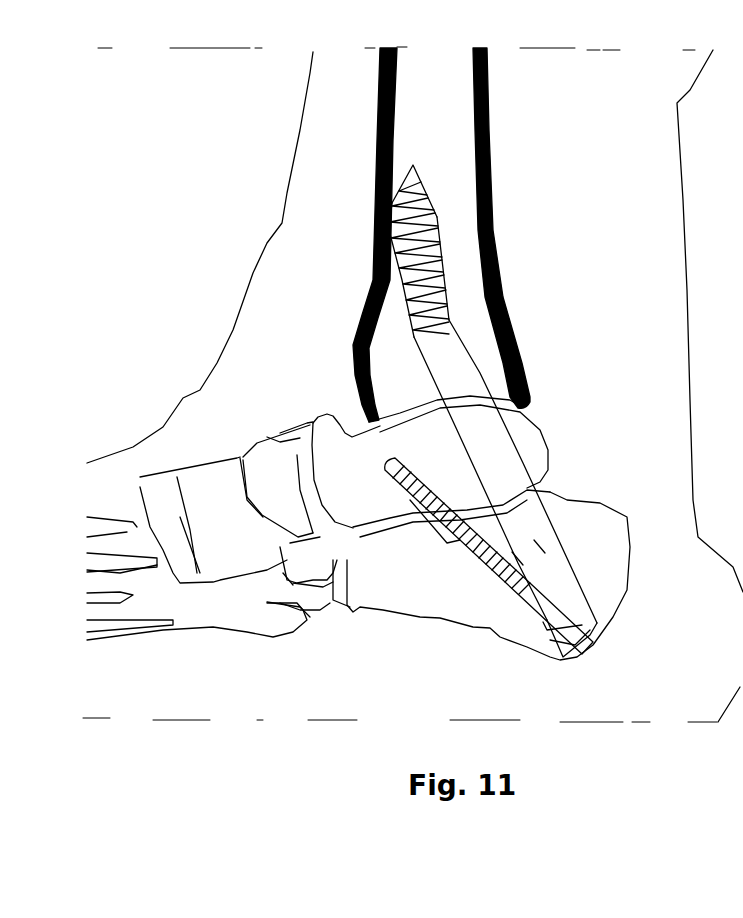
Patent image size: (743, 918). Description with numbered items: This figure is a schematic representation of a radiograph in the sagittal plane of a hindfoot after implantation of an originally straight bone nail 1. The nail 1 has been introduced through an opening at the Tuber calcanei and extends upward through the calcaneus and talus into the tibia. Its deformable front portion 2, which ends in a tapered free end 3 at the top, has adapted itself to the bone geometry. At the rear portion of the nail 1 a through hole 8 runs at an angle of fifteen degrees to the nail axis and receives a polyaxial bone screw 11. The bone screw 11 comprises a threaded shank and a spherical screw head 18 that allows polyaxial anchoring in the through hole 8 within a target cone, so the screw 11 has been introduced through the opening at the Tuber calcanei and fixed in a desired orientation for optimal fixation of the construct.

The bone nail 1 is at (480, 367).
The front portion 2 is at (430, 272).
The free end 3 is at (413, 165).
The through hole 8 is at (519, 563).
The bone screw 11 is at (488, 538).
The spherical screw head 18 is at (593, 620).